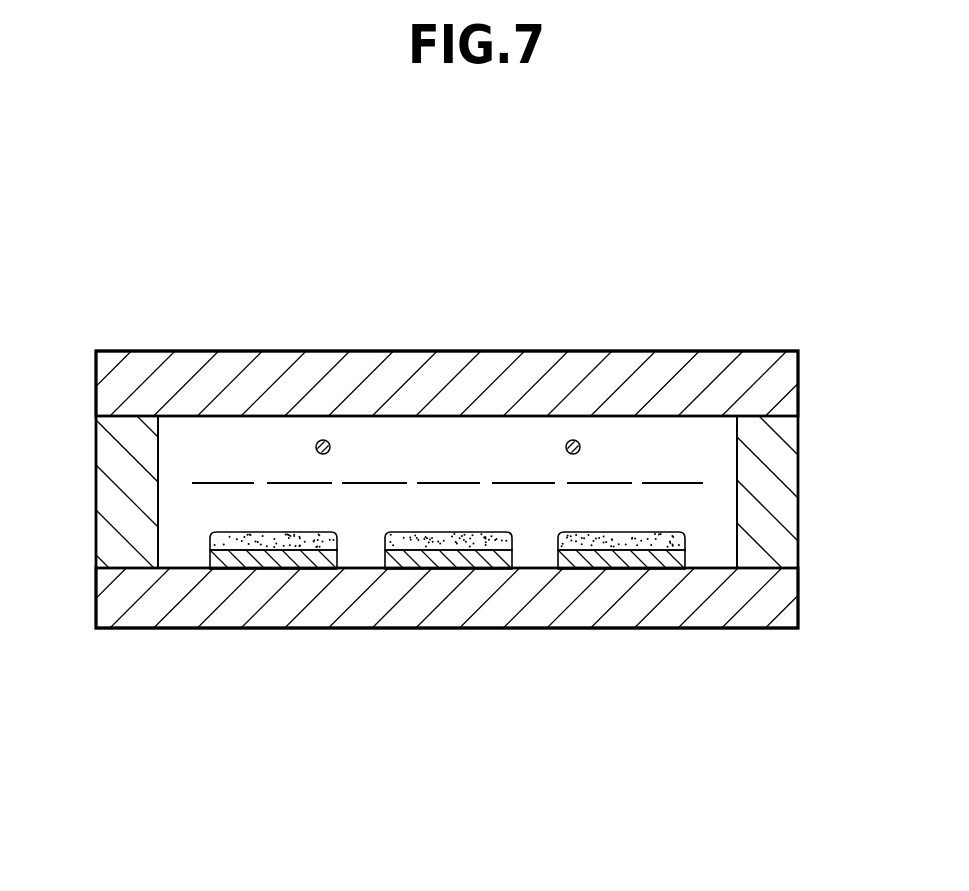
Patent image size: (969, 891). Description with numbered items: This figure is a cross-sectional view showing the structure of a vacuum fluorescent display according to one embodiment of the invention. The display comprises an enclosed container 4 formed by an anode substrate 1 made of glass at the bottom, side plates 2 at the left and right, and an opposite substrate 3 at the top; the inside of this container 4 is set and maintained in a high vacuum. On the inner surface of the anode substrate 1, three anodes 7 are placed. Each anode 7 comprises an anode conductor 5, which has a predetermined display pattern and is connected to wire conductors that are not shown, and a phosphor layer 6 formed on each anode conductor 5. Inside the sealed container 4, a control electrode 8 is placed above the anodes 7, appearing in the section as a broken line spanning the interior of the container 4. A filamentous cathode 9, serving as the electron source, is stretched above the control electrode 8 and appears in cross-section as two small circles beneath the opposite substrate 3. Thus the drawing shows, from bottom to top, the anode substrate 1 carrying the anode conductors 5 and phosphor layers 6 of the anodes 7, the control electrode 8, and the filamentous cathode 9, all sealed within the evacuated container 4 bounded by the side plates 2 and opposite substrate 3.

The anode substrate 1 is at (467, 598).
The side plates 2 is at (777, 493).
The opposite substrate 3 is at (775, 390).
The enclosed container 4 is at (455, 489).
The anode conductor 5 is at (302, 560).
The phosphor layer 6 is at (239, 546).
The anode 7 is at (447, 653).
The control electrode 8 is at (220, 482).
The filamentous cathode 9 is at (323, 438).